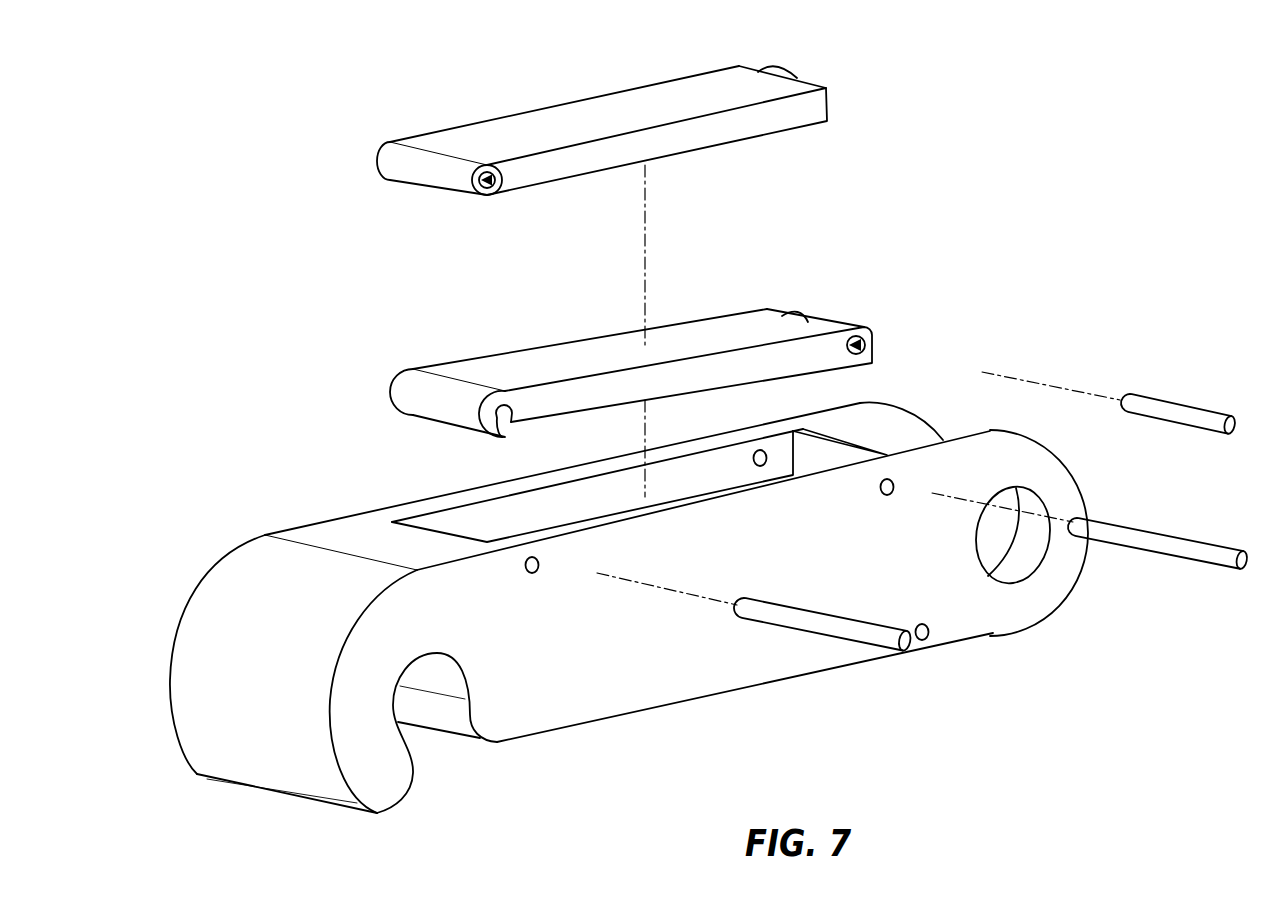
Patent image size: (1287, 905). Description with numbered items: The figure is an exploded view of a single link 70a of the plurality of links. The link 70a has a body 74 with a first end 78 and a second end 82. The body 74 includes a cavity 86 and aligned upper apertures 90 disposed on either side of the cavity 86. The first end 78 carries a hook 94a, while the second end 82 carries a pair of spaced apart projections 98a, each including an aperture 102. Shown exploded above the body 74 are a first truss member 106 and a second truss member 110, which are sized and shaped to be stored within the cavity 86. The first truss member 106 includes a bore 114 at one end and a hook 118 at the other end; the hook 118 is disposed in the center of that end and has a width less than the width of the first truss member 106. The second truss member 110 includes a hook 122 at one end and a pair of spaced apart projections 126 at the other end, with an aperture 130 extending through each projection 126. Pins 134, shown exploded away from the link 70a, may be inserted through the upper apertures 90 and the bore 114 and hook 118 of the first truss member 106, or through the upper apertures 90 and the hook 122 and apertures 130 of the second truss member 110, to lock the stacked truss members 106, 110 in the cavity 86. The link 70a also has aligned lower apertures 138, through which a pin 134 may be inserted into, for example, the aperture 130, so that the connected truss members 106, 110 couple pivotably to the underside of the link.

The link 70a is at (222, 462).
The body 74 is at (558, 703).
The first end 78 is at (156, 659).
The second end 82 is at (1060, 447).
The cavity 86 is at (476, 528).
The upper apertures 90 is at (768, 458).
The hook 94a is at (387, 760).
The spaced apart projections 98a is at (892, 435).
The aperture 102 is at (1017, 556).
The first truss member 106 is at (560, 128).
The second truss member 110 is at (597, 352).
The bore 114 is at (496, 180).
The hook 118 is at (782, 80).
The hook 122 is at (413, 393).
The spaced apart projections 126 is at (766, 310).
The aperture 130 is at (866, 345).
The pins 134 is at (1172, 412).
The lower apertures 138 is at (932, 632).